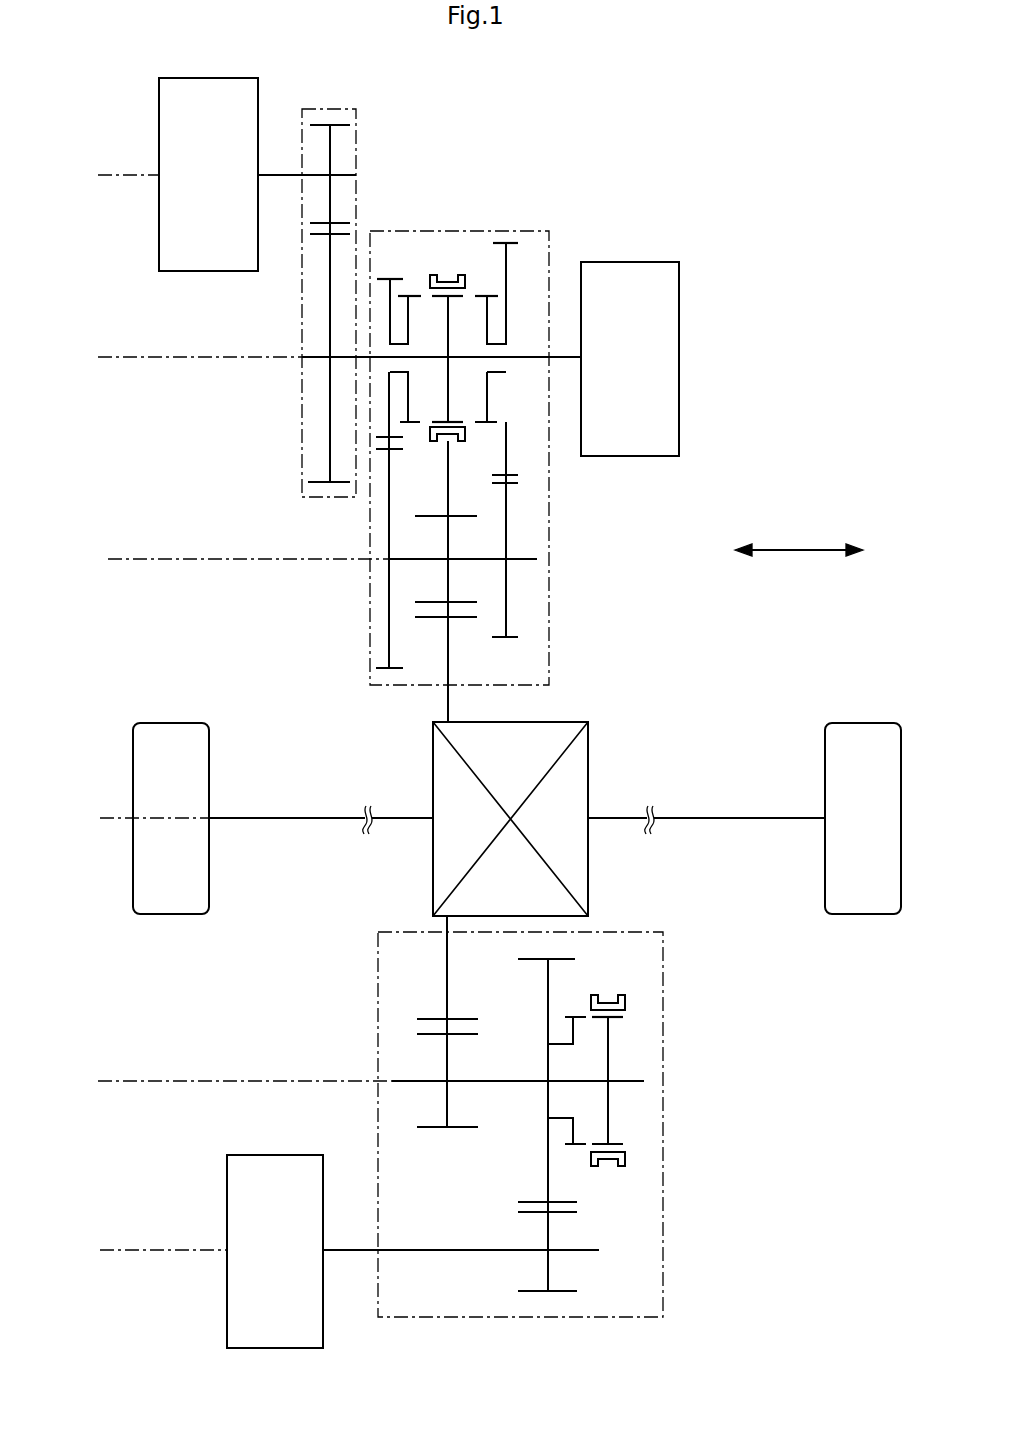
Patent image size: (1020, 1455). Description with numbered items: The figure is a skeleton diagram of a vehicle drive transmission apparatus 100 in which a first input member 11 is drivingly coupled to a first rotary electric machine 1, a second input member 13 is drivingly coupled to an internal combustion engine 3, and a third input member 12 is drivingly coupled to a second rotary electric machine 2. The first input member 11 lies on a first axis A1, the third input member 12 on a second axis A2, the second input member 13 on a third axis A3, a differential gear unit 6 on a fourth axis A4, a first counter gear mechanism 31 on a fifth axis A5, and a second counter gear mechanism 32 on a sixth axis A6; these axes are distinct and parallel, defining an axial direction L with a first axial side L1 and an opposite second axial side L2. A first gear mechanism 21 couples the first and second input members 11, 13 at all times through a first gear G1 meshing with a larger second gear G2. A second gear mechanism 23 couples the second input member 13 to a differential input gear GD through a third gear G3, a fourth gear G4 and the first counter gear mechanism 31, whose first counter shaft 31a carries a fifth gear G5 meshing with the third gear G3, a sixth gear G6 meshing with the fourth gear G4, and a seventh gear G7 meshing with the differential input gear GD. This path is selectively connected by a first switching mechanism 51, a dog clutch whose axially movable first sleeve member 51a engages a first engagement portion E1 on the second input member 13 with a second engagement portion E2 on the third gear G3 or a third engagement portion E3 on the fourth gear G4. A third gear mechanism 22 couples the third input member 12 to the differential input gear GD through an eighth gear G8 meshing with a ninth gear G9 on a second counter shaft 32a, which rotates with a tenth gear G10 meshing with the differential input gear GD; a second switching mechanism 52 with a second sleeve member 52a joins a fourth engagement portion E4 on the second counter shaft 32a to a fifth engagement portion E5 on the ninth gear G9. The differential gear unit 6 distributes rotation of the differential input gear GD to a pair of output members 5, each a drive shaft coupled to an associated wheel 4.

The vehicle drive transmission apparatus 100 is at (780, 68).
The first rotary electric machine 1 is at (159, 97).
The second rotary electric machine 2 is at (233, 1322).
The internal combustion engine 3 is at (679, 290).
The wheels 4 is at (157, 728).
The output members 5 is at (388, 812).
The differential gear unit 6 is at (588, 747).
The first input member 11 is at (345, 170).
The third input member 12 is at (433, 1252).
The second input member 13 is at (330, 358).
The first gear mechanism 21 is at (318, 109).
The third gear mechanism 22 is at (663, 1205).
The second gear mechanism 23 is at (549, 231).
The first counter gear mechanism 31 is at (520, 612).
The first counter shaft 31a is at (522, 561).
The second counter gear mechanism 32 is at (432, 1162).
The second counter shaft 32a is at (624, 1083).
The first switching mechanism 51 is at (447, 257).
The first sleeve member 51a is at (447, 441).
The second switching mechanism 52 is at (673, 1019).
The second sleeve member 52a is at (625, 997).
The first axis A1 is at (206, 175).
The second axis A2 is at (142, 1250).
The third axis A3 is at (319, 360).
The fourth axis A4 is at (133, 818).
The fifth axis A5 is at (222, 560).
The sixth axis A6 is at (350, 1082).
The first engagement portion E1 is at (438, 290).
The second engagement portion E2 is at (417, 296).
The third engagement portion E3 is at (484, 296).
The fourth engagement portion E4 is at (612, 1020).
The fifth engagement portion E5 is at (572, 1017).
The first gear G1 is at (338, 124).
The second gear G2 is at (322, 480).
The third gear G3 is at (388, 278).
The fourth gear G4 is at (506, 243).
The fifth gear G5 is at (385, 668).
The sixth gear G6 is at (512, 484).
The seventh gear G7 is at (428, 517).
The eighth gear G8 is at (557, 1292).
The ninth gear G9 is at (557, 1200).
The tenth gear G10 is at (435, 1127).
The differential input gear GD is at (435, 1018).
The axial direction L is at (799, 537).
The first axial side L1 is at (716, 555).
The second axial side L2 is at (879, 555).